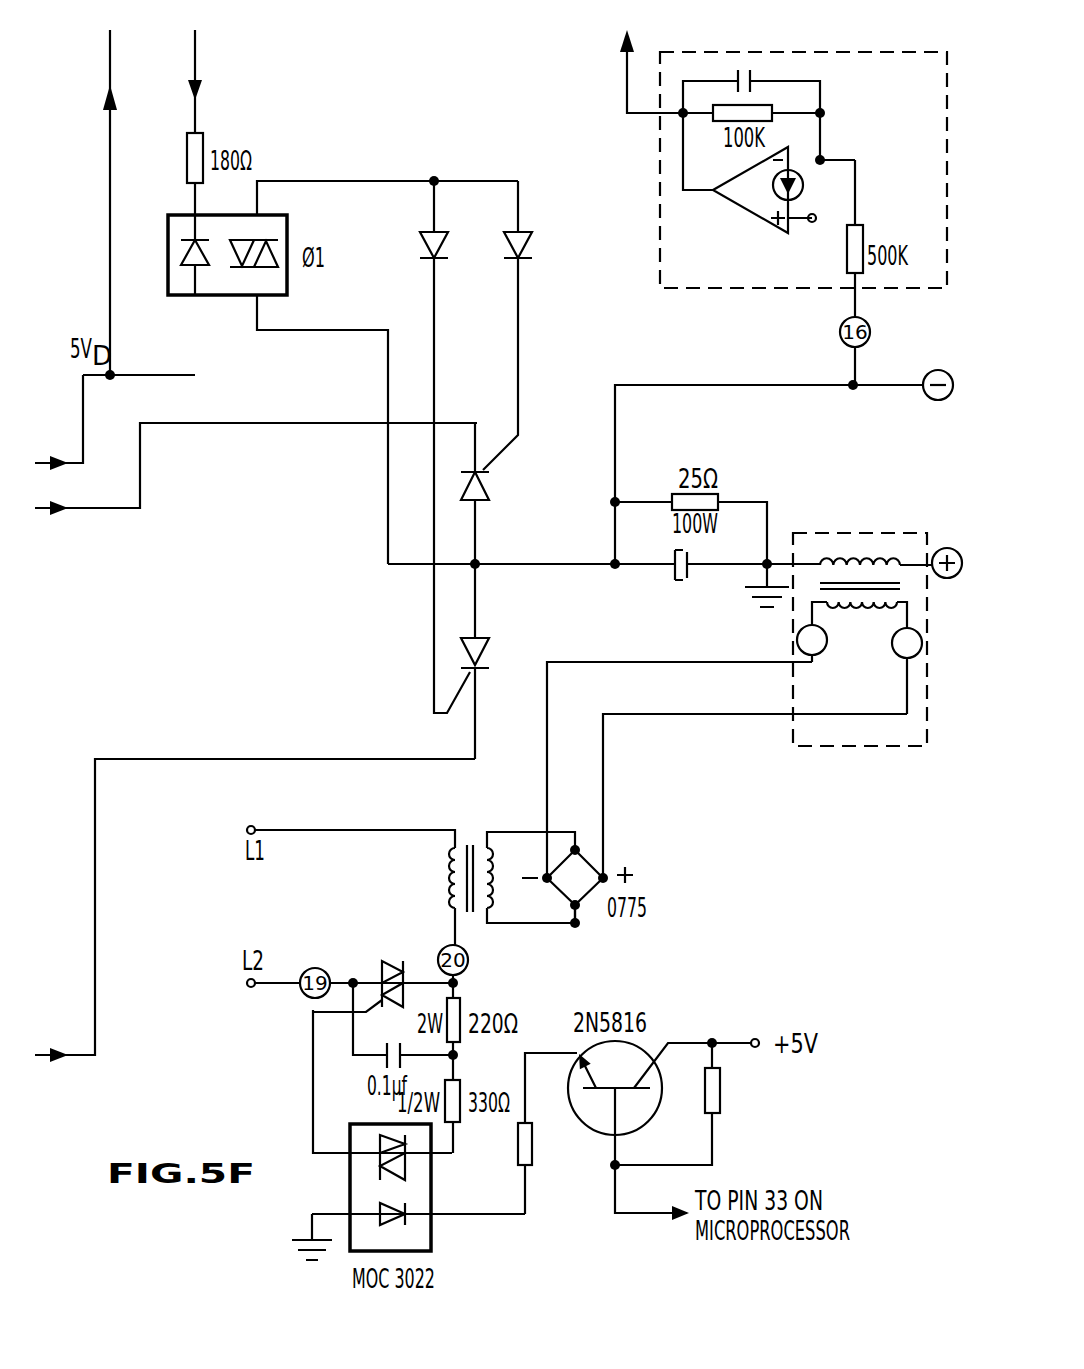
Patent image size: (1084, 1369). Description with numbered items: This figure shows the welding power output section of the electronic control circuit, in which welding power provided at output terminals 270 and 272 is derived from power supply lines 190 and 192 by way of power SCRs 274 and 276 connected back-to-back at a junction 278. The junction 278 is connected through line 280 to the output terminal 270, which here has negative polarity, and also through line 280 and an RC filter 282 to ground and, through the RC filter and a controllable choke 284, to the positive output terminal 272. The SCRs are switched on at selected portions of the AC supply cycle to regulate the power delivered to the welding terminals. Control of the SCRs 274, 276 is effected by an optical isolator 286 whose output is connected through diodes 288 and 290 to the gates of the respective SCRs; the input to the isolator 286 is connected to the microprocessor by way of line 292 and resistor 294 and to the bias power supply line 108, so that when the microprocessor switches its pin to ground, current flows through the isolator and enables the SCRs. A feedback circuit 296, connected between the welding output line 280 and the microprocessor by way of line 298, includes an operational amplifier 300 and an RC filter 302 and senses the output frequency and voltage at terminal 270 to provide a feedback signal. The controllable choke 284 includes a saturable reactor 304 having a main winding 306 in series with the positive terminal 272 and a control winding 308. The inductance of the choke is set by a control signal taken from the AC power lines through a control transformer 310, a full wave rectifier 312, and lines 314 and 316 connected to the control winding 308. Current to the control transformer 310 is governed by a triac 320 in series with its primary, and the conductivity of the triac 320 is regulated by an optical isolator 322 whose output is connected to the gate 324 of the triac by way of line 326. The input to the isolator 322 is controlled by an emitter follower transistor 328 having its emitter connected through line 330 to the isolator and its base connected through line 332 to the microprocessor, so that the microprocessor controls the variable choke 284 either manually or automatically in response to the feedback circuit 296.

The line 108 is at (112, 190).
The power supply line 190 is at (215, 425).
The power supply line 192 is at (120, 758).
The output terminal 270 is at (925, 400).
The output terminal 272 is at (945, 548).
The power SCR 274 is at (488, 490).
The power SCR 276 is at (490, 648).
The junction 278 is at (478, 560).
The line 280 is at (540, 568).
The RC filter 282 is at (710, 553).
The controllable choke 284 is at (897, 748).
The optical isolator 286 is at (222, 297).
The diode 288 is at (528, 238).
The diode 290 is at (418, 245).
The line 292 is at (197, 50).
The resistor 294 is at (187, 180).
The feedback circuit 296 is at (693, 270).
The line 298 is at (627, 75).
The operational amplifier 300 is at (748, 212).
The RC filter 302 is at (815, 92).
The saturable reactor 304 is at (907, 587).
The main winding 306 is at (844, 555).
The control winding 308 is at (845, 625).
The control transformer 310 is at (463, 840).
The full wave rectifier 312 is at (580, 888).
The line 314 is at (663, 665).
The line 316 is at (727, 718).
The triac 320 is at (394, 962).
The optical isolator 322 is at (432, 1183).
The gate 324 is at (376, 1003).
The line 326 is at (313, 1095).
The emitter follower transistor 328 is at (572, 1115).
The line 330 is at (495, 1218).
The line 332 is at (635, 1218).